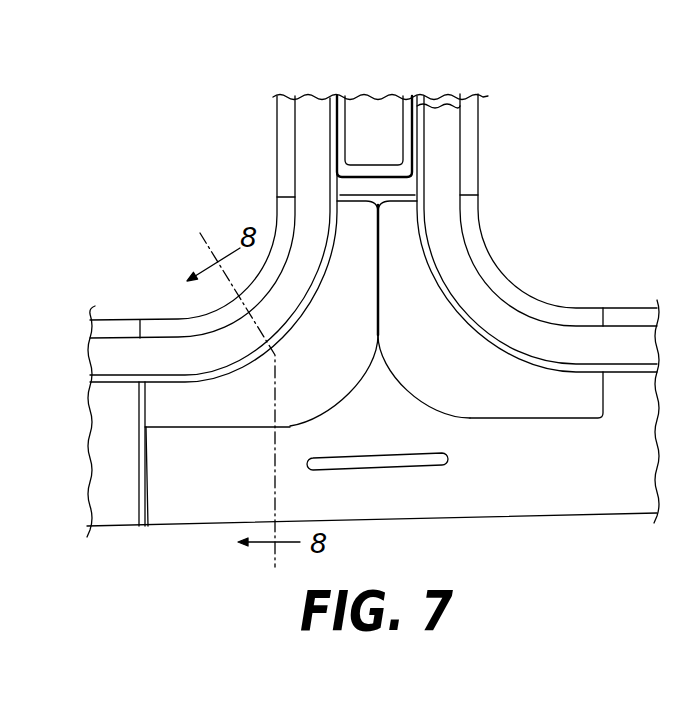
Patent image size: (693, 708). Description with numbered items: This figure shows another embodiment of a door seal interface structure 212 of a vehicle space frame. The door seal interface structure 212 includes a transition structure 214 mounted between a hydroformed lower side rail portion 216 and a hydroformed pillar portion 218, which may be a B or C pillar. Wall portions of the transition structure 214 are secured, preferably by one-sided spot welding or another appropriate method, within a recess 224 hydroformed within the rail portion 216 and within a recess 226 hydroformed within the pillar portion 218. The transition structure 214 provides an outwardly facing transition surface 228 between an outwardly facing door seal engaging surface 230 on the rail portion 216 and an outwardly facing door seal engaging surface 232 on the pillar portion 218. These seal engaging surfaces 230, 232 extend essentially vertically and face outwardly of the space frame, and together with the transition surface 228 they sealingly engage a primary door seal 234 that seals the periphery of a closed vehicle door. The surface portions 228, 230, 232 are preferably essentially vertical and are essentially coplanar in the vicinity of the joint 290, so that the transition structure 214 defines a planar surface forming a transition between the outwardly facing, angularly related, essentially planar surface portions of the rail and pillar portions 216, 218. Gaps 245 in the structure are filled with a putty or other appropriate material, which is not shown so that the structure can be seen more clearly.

The door seal interface structure 212 is at (136, 206).
The transition structure 214 is at (318, 390).
The hydroformed lower side rail portion 216 is at (333, 503).
The hydroformed pillar portion 218 is at (320, 100).
The recess 224 is at (145, 527).
The recess 226 is at (478, 173).
The transition surface 228 is at (180, 412).
The door seal engaging surface 230 is at (105, 422).
The door seal engaging surface 232 is at (318, 102).
The primary door seal 234 is at (317, 127).
The gaps 245 is at (277, 198).
The joint 290 is at (530, 232).